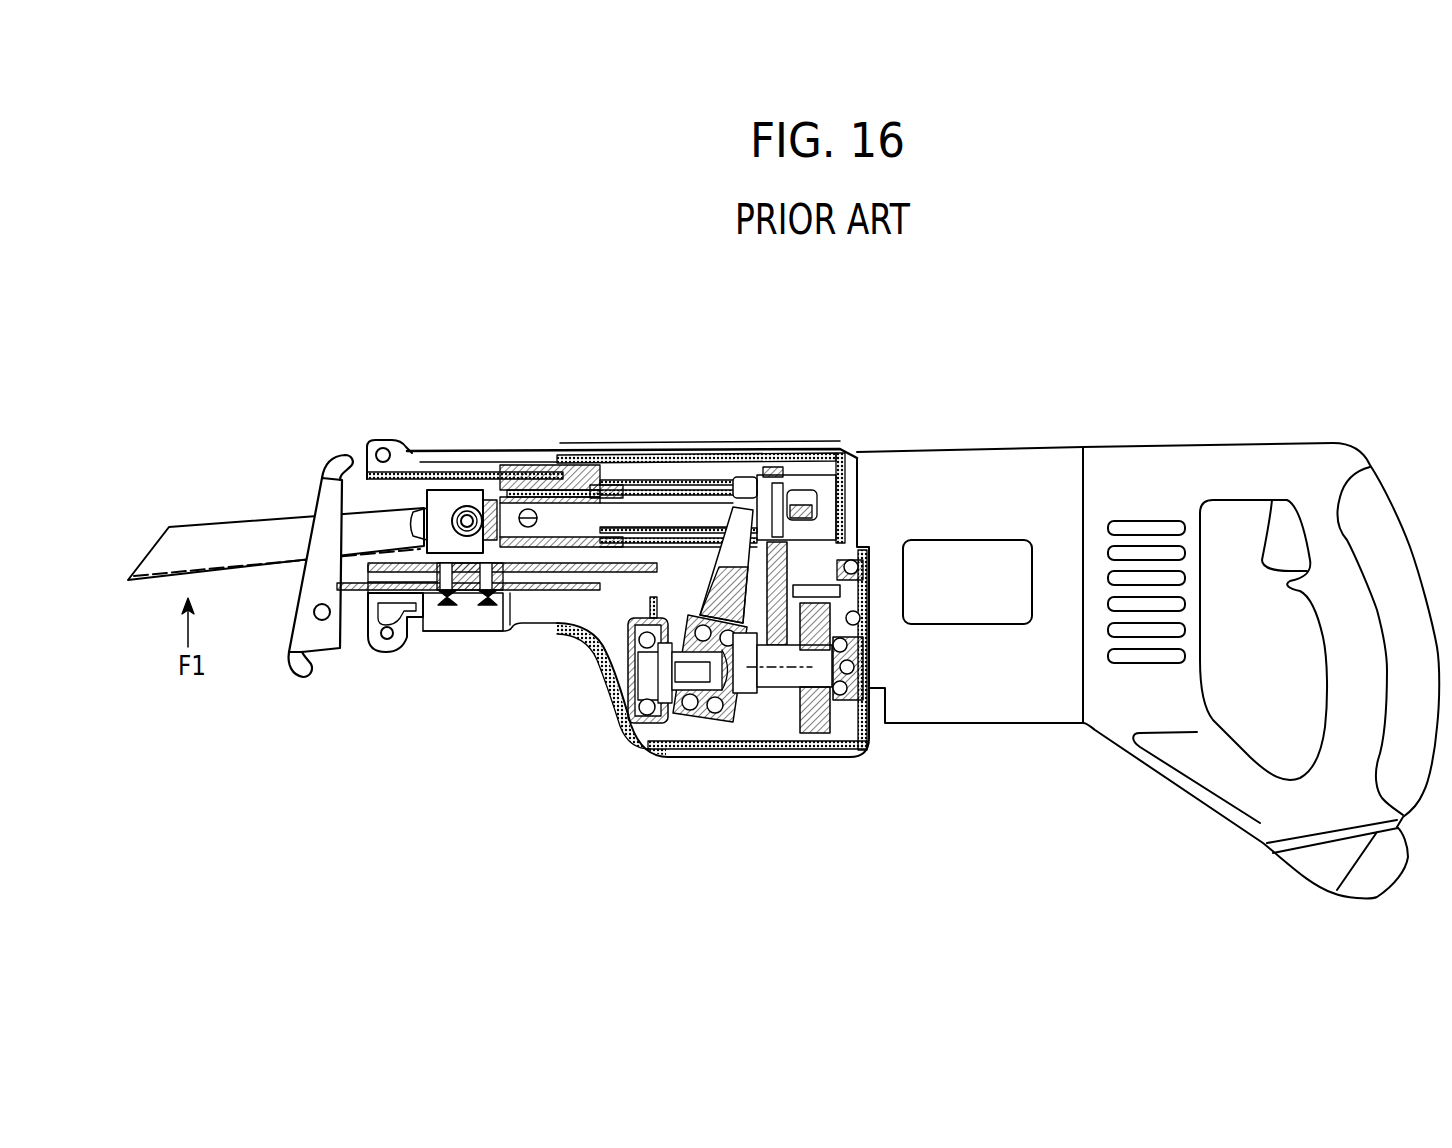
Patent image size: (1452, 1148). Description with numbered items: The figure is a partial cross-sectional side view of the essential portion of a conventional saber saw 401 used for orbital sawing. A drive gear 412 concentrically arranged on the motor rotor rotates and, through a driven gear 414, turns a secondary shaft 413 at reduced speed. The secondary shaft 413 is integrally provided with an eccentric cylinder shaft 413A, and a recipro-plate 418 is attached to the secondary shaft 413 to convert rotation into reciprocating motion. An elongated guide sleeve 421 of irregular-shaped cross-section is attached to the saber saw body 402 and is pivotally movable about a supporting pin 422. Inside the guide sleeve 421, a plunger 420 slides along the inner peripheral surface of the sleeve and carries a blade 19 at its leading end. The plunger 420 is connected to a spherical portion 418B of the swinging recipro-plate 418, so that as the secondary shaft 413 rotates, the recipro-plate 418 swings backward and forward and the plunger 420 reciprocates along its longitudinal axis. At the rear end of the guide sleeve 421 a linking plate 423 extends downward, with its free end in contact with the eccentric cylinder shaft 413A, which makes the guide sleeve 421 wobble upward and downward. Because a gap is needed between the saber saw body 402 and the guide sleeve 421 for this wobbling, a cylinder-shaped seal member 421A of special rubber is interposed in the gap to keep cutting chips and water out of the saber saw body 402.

The blade 19 is at (217, 538).
The saber saw 401 is at (1148, 567).
The saber saw body 402 is at (958, 470).
The drive gear 412 is at (848, 565).
The secondary shaft 413 is at (730, 725).
The eccentric cylinder shaft 413A is at (778, 676).
The driven gear 414 is at (820, 737).
The recipro-plate 418 is at (630, 612).
The spherical portion 418B is at (745, 478).
The plunger 420 is at (641, 490).
The guide sleeve 421 is at (613, 476).
The seal member 421A is at (585, 603).
The supporting pin 422 is at (572, 483).
The linking plate 423 is at (787, 565).